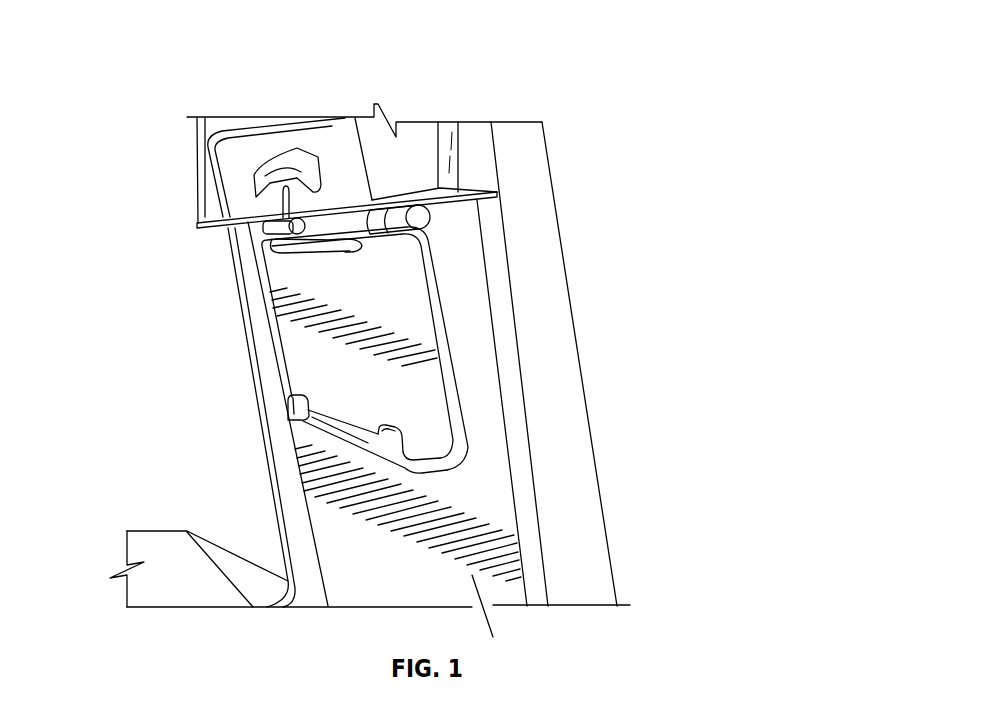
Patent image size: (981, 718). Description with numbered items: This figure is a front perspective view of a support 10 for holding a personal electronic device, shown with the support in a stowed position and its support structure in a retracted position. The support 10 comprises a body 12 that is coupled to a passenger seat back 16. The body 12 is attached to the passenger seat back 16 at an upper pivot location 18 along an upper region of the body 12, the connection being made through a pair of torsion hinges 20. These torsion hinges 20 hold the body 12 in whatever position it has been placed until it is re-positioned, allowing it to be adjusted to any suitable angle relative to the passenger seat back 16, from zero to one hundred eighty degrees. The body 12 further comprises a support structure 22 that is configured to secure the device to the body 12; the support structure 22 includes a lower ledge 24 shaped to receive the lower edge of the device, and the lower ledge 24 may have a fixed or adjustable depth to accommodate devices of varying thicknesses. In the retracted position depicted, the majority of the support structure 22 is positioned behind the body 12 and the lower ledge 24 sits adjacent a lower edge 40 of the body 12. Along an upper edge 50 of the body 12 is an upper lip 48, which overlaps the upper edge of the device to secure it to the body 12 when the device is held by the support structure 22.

The support 10 is at (577, 129).
The body 12 is at (398, 318).
The passenger seat back 16 is at (568, 357).
The upper pivot location 18 is at (352, 240).
The torsion hinges 20 is at (300, 217).
The support structure 22 is at (297, 408).
The lower ledge 24 is at (352, 432).
The lower edge 40 is at (405, 447).
The upper lip 48 is at (287, 250).
The upper edge 50 is at (352, 236).